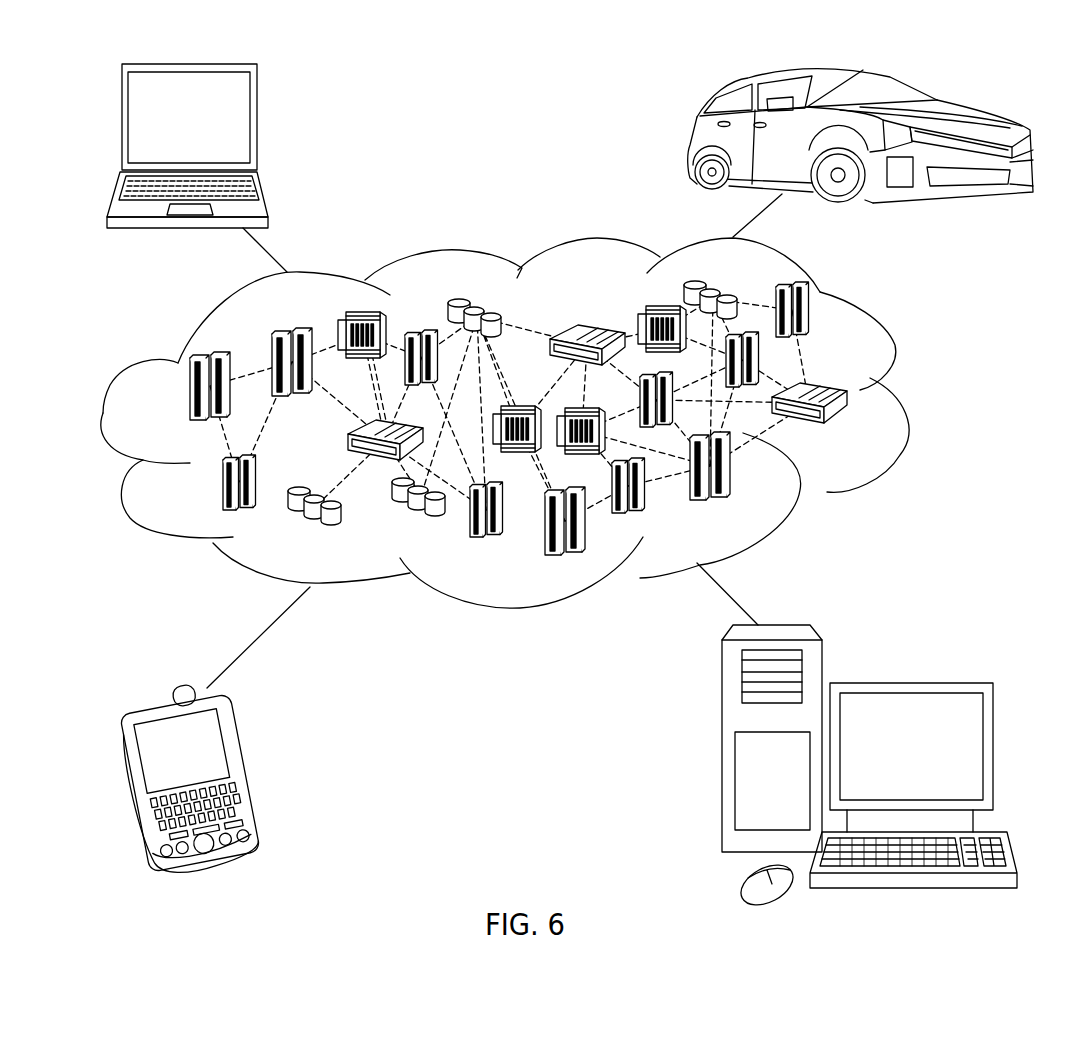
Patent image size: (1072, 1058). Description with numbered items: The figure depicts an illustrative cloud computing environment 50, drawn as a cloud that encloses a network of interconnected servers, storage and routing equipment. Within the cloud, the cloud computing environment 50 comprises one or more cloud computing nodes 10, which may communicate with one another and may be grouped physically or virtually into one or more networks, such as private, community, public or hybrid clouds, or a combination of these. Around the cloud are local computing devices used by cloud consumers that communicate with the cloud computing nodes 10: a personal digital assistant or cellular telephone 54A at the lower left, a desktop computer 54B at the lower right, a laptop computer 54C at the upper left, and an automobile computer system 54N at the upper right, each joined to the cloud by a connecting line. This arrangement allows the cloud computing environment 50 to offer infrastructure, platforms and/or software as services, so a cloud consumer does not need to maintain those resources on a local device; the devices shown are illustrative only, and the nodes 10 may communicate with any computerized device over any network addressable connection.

The cloud computing node 10 is at (853, 425).
The cloud computing environment 50 is at (910, 396).
The personal digital assistant or cellular telephone 54A is at (247, 777).
The desktop computer 54B is at (908, 683).
The laptop computer 54C is at (257, 125).
The automobile computer system 54N is at (690, 140).